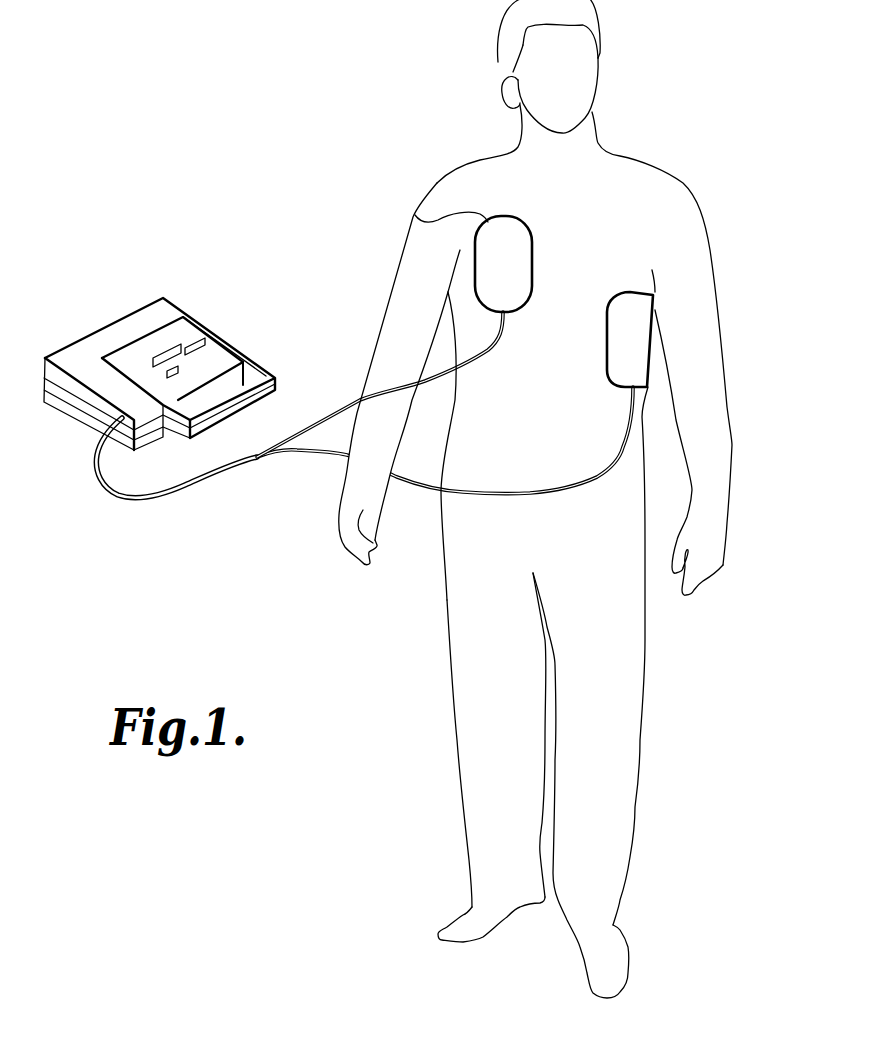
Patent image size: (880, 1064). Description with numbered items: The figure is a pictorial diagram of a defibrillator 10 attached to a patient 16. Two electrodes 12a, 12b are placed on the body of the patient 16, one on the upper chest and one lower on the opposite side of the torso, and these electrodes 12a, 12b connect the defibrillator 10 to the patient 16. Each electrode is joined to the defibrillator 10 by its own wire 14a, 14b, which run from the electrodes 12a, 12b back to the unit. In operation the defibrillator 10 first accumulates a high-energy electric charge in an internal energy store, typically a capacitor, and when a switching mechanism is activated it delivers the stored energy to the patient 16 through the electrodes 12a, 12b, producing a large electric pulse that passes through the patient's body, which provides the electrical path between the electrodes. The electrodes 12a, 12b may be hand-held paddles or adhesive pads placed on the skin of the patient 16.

The defibrillator 10 is at (147, 300).
The electrode 12a is at (415, 215).
The electrode 12b is at (637, 310).
The wire 14a is at (337, 413).
The wire 14b is at (325, 458).
The patient 16 is at (647, 164).